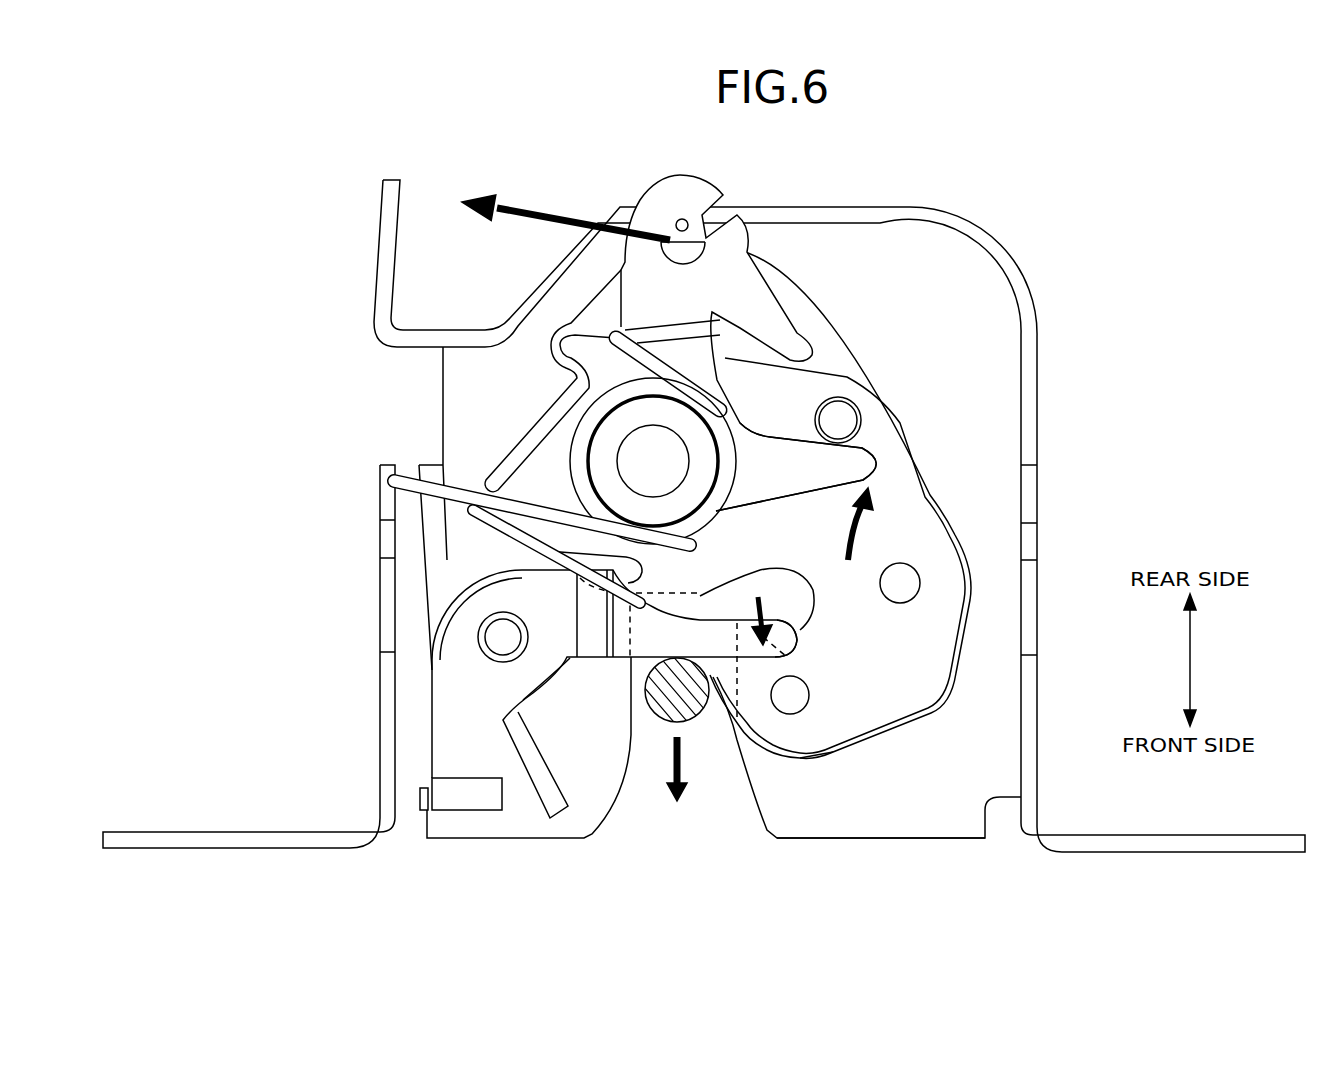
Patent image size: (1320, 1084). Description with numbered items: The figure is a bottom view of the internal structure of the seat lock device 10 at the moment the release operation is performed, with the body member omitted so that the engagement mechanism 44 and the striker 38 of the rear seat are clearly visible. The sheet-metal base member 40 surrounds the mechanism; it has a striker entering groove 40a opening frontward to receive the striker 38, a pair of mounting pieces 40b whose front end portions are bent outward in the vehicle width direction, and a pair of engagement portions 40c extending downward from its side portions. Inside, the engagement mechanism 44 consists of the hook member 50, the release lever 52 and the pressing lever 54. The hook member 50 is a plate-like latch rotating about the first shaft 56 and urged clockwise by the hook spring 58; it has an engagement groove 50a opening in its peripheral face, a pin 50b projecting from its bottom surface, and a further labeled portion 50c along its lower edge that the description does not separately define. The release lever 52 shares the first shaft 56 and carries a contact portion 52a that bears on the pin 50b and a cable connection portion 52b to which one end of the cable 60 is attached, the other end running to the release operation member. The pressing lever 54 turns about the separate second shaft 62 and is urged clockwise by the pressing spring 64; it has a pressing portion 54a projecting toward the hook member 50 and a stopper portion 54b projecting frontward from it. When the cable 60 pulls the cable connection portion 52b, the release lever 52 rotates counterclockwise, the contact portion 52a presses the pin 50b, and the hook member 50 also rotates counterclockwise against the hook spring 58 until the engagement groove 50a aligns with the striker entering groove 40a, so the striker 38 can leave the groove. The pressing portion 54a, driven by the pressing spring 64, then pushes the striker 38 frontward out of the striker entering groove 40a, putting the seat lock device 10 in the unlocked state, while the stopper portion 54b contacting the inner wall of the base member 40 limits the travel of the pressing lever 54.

The seat lock device 10 is at (262, 231).
The striker 38 is at (697, 723).
The base member 40 is at (925, 260).
The striker entering groove 40a is at (603, 823).
The mounting piece 40b is at (222, 849).
The engagement portion 40c is at (390, 538).
The engagement mechanism 44 is at (953, 377).
The hook member 50 is at (950, 507).
The engagement groove 50a is at (813, 605).
The pin 50b is at (838, 420).
The lower edge of base plate 50c is at (850, 755).
The release lever 52 is at (730, 391).
The contact portion 52a is at (866, 466).
The cable connection portion 52b is at (682, 219).
The pressing lever 54 is at (449, 684).
The pressing portion 54a is at (785, 663).
The stopper portion 54b is at (468, 796).
The first shaft 56 is at (653, 461).
The hook spring 58 is at (658, 365).
The cable 60 is at (537, 205).
The second shaft 62 is at (503, 637).
The pressing spring 64 is at (433, 512).